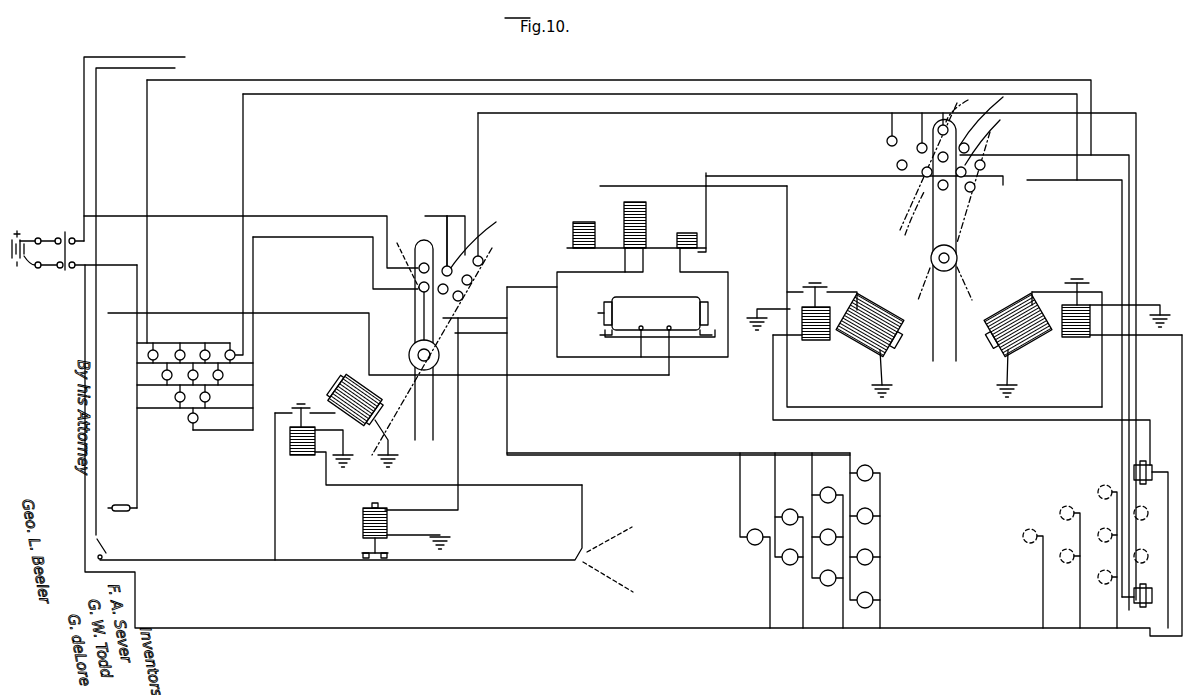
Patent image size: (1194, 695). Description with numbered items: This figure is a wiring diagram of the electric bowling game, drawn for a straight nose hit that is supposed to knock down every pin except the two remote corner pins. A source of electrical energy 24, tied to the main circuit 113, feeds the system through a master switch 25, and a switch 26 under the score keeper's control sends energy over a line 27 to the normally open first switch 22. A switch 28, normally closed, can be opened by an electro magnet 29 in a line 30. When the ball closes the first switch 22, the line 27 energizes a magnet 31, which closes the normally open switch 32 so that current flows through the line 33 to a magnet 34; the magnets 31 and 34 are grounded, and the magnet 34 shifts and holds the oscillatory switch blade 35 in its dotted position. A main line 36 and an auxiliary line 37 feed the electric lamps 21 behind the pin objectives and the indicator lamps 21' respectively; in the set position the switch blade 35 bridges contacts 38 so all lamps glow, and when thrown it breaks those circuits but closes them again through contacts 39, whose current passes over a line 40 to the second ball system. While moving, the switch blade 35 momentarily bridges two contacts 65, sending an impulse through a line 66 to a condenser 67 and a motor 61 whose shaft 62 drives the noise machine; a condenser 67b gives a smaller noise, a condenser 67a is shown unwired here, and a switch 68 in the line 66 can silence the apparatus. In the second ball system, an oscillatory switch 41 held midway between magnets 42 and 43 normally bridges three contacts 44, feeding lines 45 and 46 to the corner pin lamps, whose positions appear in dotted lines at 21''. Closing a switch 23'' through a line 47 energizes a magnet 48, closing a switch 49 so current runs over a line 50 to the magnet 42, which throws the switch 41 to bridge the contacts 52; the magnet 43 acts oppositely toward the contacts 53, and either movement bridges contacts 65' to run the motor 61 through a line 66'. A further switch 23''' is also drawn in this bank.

The main circuit 113 is at (110, 58).
The line 40 is at (680, 112).
The contacts 44 is at (941, 168).
The contacts 65' is at (952, 146).
The contacts 53 is at (896, 166).
The line 45 is at (1044, 373).
The line 46 is at (1074, 379).
The contacts 65 is at (440, 335).
The contacts 52 is at (976, 190).
The main line 36 is at (385, 235).
The line 66 is at (491, 349).
The contacts 38 is at (410, 258).
The contacts 39 is at (472, 280).
The condenser 67 is at (647, 215).
The condenser 67b is at (698, 236).
The condenser 67a is at (570, 246).
The line 66' is at (851, 291).
The motor 61 is at (650, 305).
The shaft 62 is at (655, 350).
The oscillatory switch 41 is at (958, 290).
The switch 49 is at (815, 284).
The line 50 is at (848, 292).
The magnet 42 is at (880, 312).
The magnet 43 is at (1005, 312).
The magnet 48 is at (814, 340).
The master switch 25 is at (62, 234).
The source of electrical energy 24 is at (22, 262).
The auxiliary line 37 is at (138, 283).
The magnet 34 is at (362, 383).
The switch 32 is at (300, 404).
The oscillatory switch blade 35 is at (437, 398).
The magnet 31 is at (293, 456).
The indicator lamps 21' is at (195, 270).
The line 47 is at (968, 420).
The switch 68 is at (125, 506).
The line 30 is at (458, 496).
The line 27 is at (546, 486).
The line 33 is at (275, 518).
The electro magnet 29 is at (362, 517).
The switch 28 is at (390, 556).
The first switch 22 is at (609, 559).
The electric lamps 21 is at (824, 540).
The pin positions 21'' is at (1085, 556).
The switches 23'' is at (1125, 538).
The switch 23''' is at (1136, 615).
The switch 26 is at (104, 548).